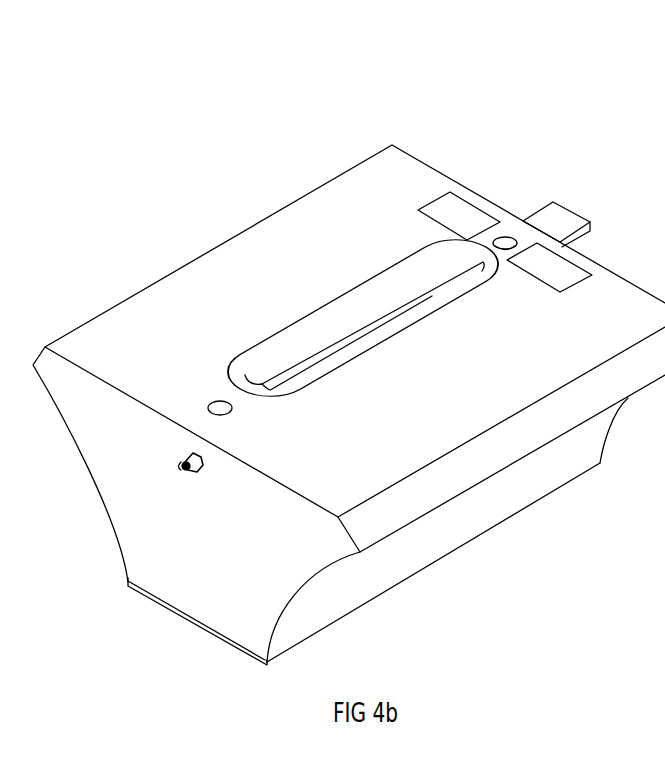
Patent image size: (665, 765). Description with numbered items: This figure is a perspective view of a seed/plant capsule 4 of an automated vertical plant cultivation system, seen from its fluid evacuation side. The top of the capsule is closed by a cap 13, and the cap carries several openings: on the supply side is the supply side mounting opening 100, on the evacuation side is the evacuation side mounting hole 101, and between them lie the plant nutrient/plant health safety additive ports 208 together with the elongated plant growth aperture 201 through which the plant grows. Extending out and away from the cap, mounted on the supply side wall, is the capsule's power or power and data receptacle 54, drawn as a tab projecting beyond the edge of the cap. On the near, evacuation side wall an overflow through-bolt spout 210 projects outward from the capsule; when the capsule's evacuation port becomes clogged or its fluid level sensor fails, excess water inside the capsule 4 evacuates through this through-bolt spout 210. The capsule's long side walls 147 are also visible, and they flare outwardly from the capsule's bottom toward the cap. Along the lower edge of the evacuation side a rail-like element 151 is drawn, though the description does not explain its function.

The capsule 4 is at (162, 66).
The cap 13 is at (88, 343).
The long side walls 147 is at (210, 249).
The bottom rail 151 is at (245, 632).
The plant growth aperture 201 is at (357, 312).
The evacuation side mounting hole 101 is at (219, 395).
The supply side mounting opening 100 is at (504, 234).
The plant nutrient/plant health safety additive port 208 is at (443, 208).
The power or power and data receptacle 54 is at (575, 208).
The overflow through-bolt spout 210 is at (180, 470).